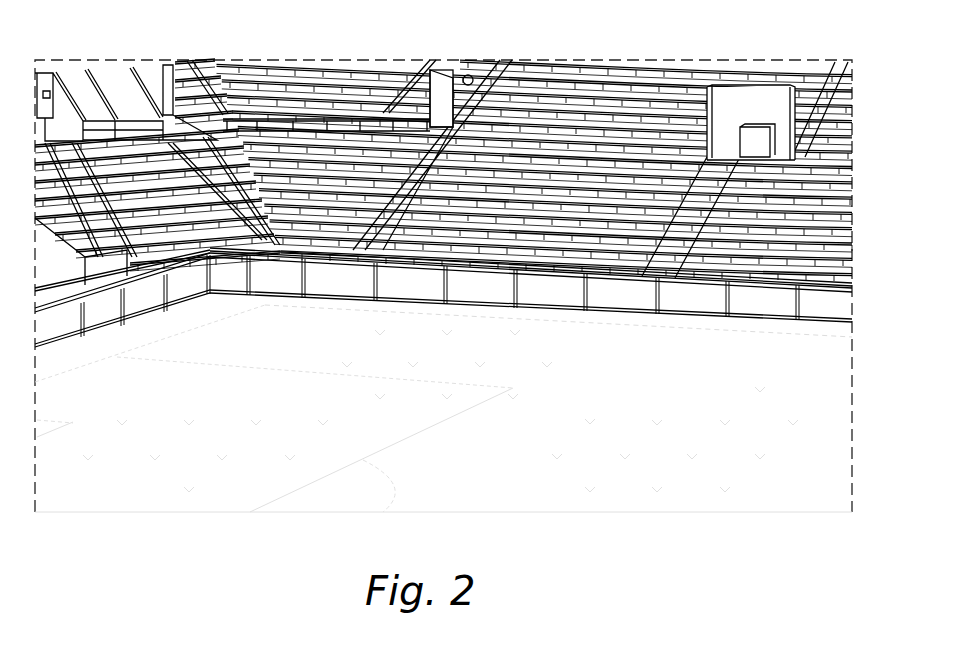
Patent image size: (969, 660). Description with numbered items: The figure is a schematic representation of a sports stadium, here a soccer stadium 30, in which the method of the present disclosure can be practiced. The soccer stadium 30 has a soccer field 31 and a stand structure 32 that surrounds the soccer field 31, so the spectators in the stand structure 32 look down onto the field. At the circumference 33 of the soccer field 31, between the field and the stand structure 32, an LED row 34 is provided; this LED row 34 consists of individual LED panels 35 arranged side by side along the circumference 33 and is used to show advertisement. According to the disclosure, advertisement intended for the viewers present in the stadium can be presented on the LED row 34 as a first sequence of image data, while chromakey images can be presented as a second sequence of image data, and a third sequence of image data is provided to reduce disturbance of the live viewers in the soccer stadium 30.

The soccer stadium 30 is at (622, 469).
The soccer field 31 is at (258, 465).
The stand structure 32 is at (515, 97).
The circumference 33 is at (280, 310).
The LED row 34 is at (442, 305).
The LED panel 35 is at (555, 297).